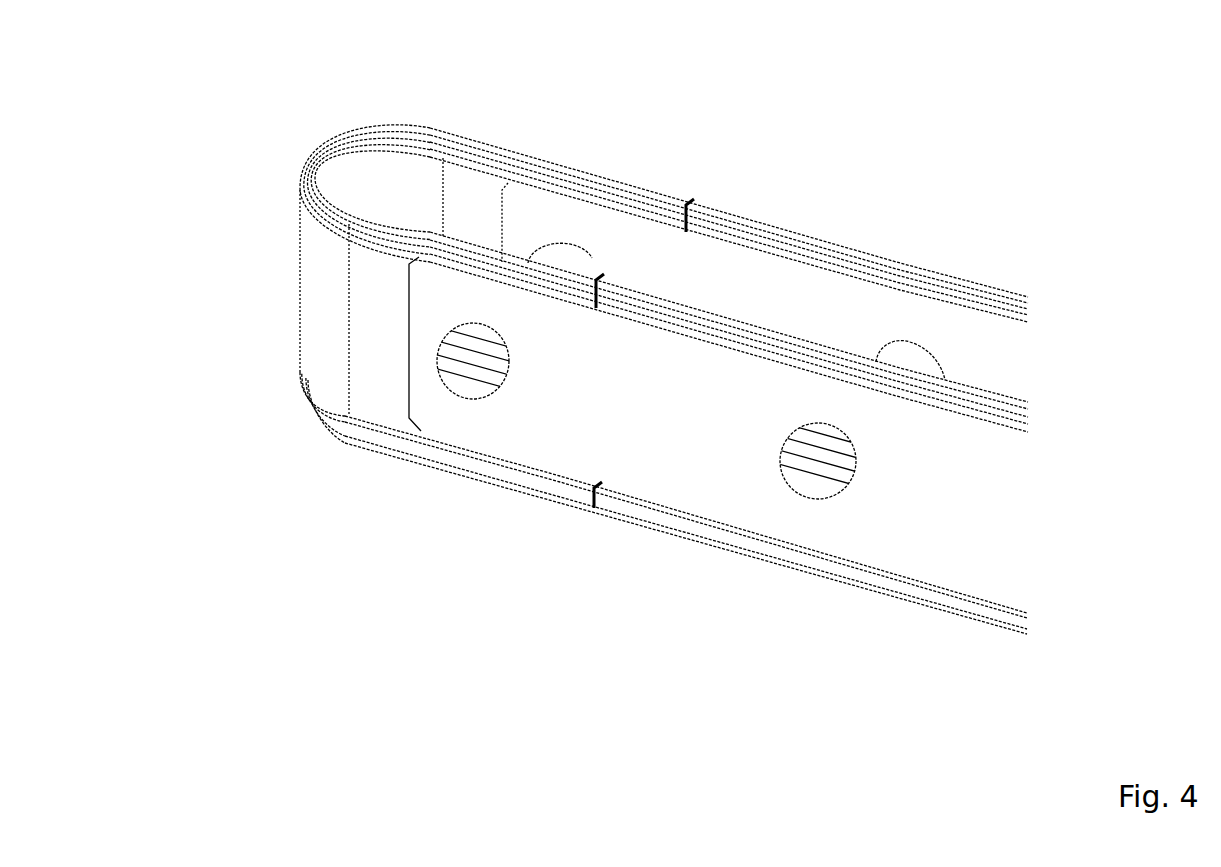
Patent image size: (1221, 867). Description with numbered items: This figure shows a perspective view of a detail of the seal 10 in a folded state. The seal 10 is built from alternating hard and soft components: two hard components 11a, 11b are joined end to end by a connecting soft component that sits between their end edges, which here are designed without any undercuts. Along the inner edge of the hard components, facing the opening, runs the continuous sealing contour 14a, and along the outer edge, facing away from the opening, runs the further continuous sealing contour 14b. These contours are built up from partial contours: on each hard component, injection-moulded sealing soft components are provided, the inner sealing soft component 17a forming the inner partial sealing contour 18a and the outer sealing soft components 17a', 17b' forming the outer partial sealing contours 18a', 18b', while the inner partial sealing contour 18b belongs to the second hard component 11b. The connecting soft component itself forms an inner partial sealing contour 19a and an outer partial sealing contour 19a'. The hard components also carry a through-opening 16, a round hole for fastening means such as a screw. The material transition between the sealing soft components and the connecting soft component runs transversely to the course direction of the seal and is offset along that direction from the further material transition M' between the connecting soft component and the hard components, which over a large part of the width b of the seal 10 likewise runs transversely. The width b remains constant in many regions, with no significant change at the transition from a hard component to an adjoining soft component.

The seal 10 is at (317, 108).
The hard component 11a is at (963, 523).
The hard component 11b is at (849, 320).
The continuous sealing contour 14a is at (369, 446).
The further continuous sealing contour 14b is at (494, 143).
The through-opening 16 is at (909, 358).
The inner sealing soft component 17a is at (686, 520).
The outer sealing soft component 17a' is at (729, 320).
The outer sealing soft component 17b' is at (729, 211).
The inner partial sealing contour 18a is at (686, 535).
The outer partial sealing contour 18a' is at (729, 339).
The inner partial sealing contour 18b is at (830, 327).
The outer partial sealing contour 18b' is at (729, 235).
The inner partial sealing contour 19a is at (643, 429).
The outer partial sealing contour 19a' is at (547, 223).
The further material transition M' is at (443, 344).
The width of the seal b is at (312, 404).